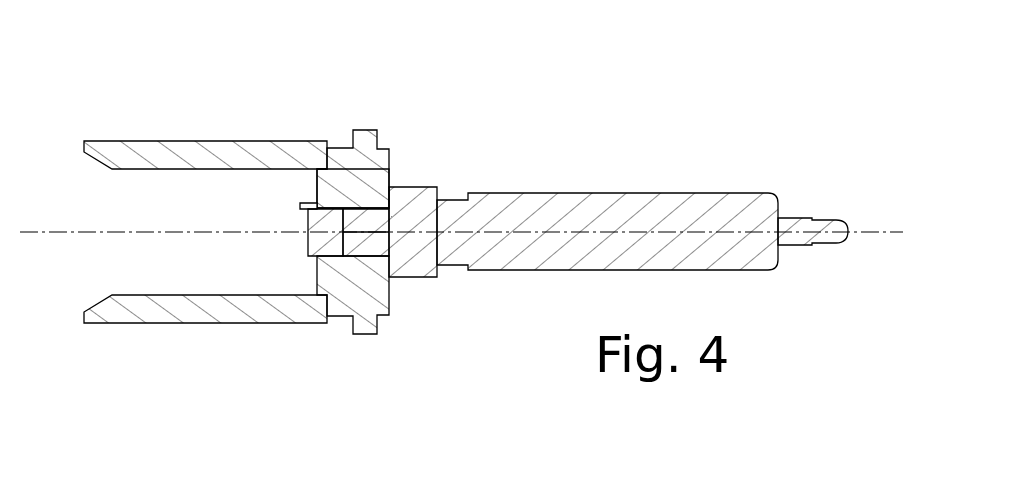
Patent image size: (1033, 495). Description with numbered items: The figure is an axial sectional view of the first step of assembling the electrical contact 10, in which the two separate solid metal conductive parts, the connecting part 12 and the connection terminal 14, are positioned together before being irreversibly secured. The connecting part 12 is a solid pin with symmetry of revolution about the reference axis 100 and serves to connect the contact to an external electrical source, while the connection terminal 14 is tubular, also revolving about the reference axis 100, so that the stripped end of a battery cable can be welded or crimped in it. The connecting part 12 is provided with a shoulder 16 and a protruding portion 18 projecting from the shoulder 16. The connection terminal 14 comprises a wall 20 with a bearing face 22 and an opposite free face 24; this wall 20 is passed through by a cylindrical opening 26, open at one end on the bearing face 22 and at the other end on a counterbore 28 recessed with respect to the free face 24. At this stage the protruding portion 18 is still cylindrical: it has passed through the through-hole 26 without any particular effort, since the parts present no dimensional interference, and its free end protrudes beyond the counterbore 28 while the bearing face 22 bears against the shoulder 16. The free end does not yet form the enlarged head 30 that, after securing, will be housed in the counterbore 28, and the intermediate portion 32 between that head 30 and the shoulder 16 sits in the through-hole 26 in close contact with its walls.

The electrical contact 10 is at (552, 95).
The connecting part 12 is at (595, 213).
The connection terminal 14 is at (135, 148).
The shoulder 16 is at (387, 193).
The protruding portion 18 is at (295, 413).
The wall 20 is at (357, 289).
The bearing face 22 is at (387, 167).
The free face 24 is at (318, 183).
The cylindrical opening 26 is at (365, 245).
The counterbore 28 is at (305, 205).
The flared free end 30 is at (310, 232).
The intermediate portion 32 is at (345, 234).
The reference axis 100 is at (890, 233).